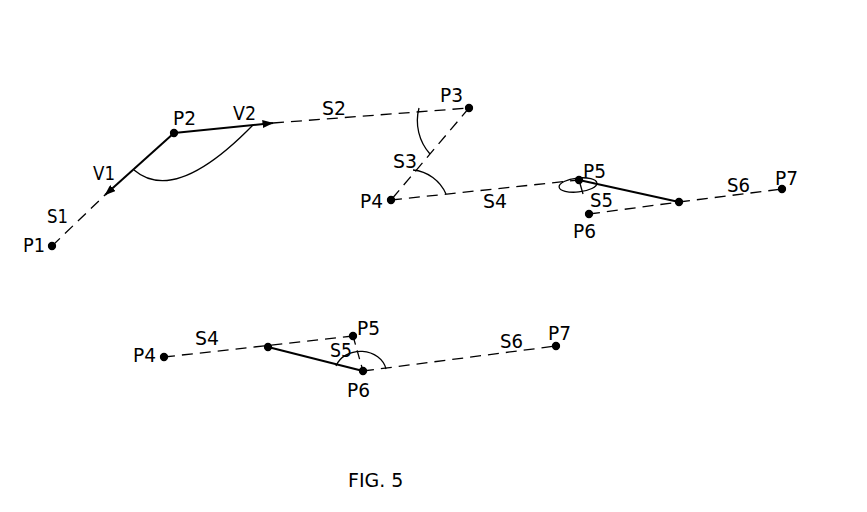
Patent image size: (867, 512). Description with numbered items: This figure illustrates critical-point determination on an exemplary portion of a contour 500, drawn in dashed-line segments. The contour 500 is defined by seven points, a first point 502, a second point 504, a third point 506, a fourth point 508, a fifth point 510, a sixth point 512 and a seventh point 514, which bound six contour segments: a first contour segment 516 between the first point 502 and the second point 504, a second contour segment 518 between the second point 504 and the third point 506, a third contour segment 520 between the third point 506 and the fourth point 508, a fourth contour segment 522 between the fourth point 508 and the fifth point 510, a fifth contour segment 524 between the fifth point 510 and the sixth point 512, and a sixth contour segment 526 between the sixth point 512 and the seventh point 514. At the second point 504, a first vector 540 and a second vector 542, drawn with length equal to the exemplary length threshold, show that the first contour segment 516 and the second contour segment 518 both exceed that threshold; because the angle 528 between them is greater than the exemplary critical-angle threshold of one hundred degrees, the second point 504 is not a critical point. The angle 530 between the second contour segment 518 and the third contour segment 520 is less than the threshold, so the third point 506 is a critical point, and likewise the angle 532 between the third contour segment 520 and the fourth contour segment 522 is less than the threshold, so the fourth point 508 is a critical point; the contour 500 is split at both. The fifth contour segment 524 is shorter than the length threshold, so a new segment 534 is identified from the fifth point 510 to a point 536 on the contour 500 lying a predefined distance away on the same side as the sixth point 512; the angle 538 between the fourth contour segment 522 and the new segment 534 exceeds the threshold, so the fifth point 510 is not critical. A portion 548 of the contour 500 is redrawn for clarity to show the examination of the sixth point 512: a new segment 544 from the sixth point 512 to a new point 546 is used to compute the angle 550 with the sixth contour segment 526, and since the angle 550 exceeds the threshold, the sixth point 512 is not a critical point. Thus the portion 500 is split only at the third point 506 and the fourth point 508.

The contour 500 is at (675, 35).
The point P1 502 is at (52, 246).
The point P2 504 is at (174, 133).
The point P3 506 is at (469, 108).
The point P4 508 is at (391, 200).
The point P5 510 is at (579, 179).
The point P6 512 is at (589, 214).
The point P7 514 is at (782, 189).
The first contour segment S1 516 is at (83, 211).
The second contour segment S2 518 is at (377, 113).
The third contour segment S3 520 is at (456, 139).
The fourth contour segment S4 522 is at (458, 201).
The fifth contour segment S5 524 is at (580, 196).
The sixth contour segment S6 526 is at (745, 207).
The angle 528 is at (185, 180).
The angle 530 is at (411, 137).
The angle 532 is at (443, 175).
The new segment 534 is at (647, 186).
The point 536 is at (679, 202).
The angle 538 is at (559, 189).
The vector V1 540 is at (128, 167).
The vector V2 542 is at (216, 125).
The new segment 544 is at (310, 367).
The new point 546 is at (268, 346).
The portion 548 is at (575, 309).
The angle 550 is at (385, 357).